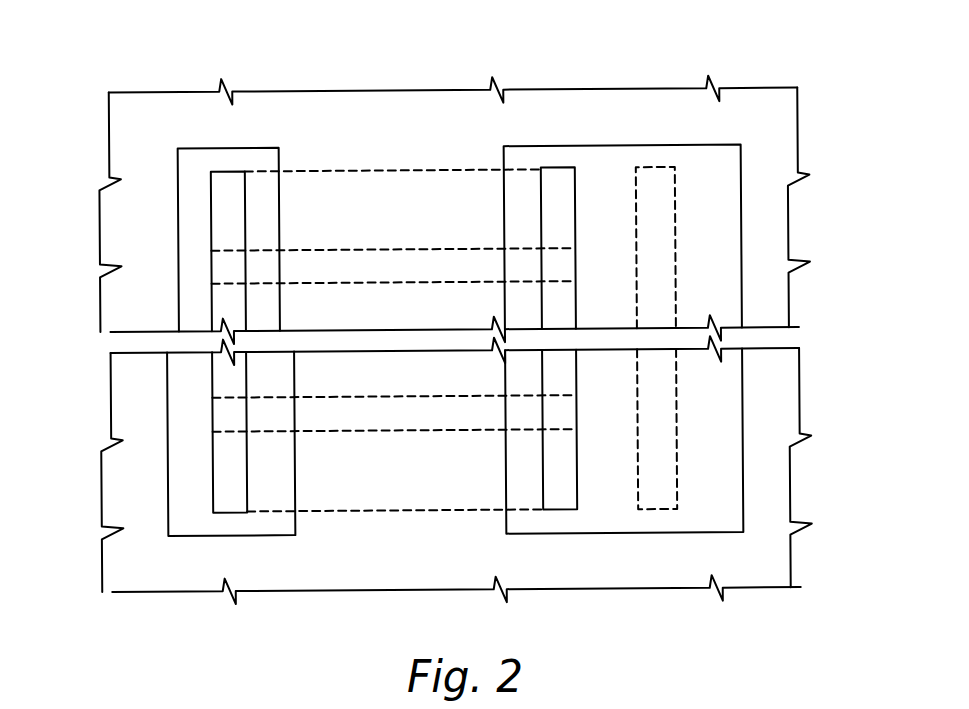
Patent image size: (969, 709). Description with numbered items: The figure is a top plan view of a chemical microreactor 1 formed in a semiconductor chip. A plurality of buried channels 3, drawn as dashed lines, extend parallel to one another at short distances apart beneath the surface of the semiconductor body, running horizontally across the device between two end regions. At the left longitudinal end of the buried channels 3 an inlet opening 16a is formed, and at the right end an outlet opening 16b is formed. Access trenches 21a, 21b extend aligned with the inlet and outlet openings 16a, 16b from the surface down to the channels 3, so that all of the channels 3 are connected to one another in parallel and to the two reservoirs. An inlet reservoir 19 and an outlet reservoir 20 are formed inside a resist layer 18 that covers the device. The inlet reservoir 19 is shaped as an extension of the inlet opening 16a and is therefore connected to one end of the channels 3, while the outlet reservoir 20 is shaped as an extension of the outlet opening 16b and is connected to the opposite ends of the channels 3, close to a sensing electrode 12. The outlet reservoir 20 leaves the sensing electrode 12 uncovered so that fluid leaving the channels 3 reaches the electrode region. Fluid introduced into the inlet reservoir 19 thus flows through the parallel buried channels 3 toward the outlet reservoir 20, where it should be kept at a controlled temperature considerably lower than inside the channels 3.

The microreactor 1 is at (810, 340).
The buried channels 3 is at (423, 183).
The sensing electrode 12 is at (667, 202).
The inlet opening 16a is at (266, 278).
The outlet opening 16b is at (558, 274).
The resist layer 18 is at (777, 568).
The inlet reservoir 19 is at (184, 172).
The outlet reservoir 20 is at (617, 158).
The access trench 21a is at (226, 182).
The access trench 21b is at (552, 175).